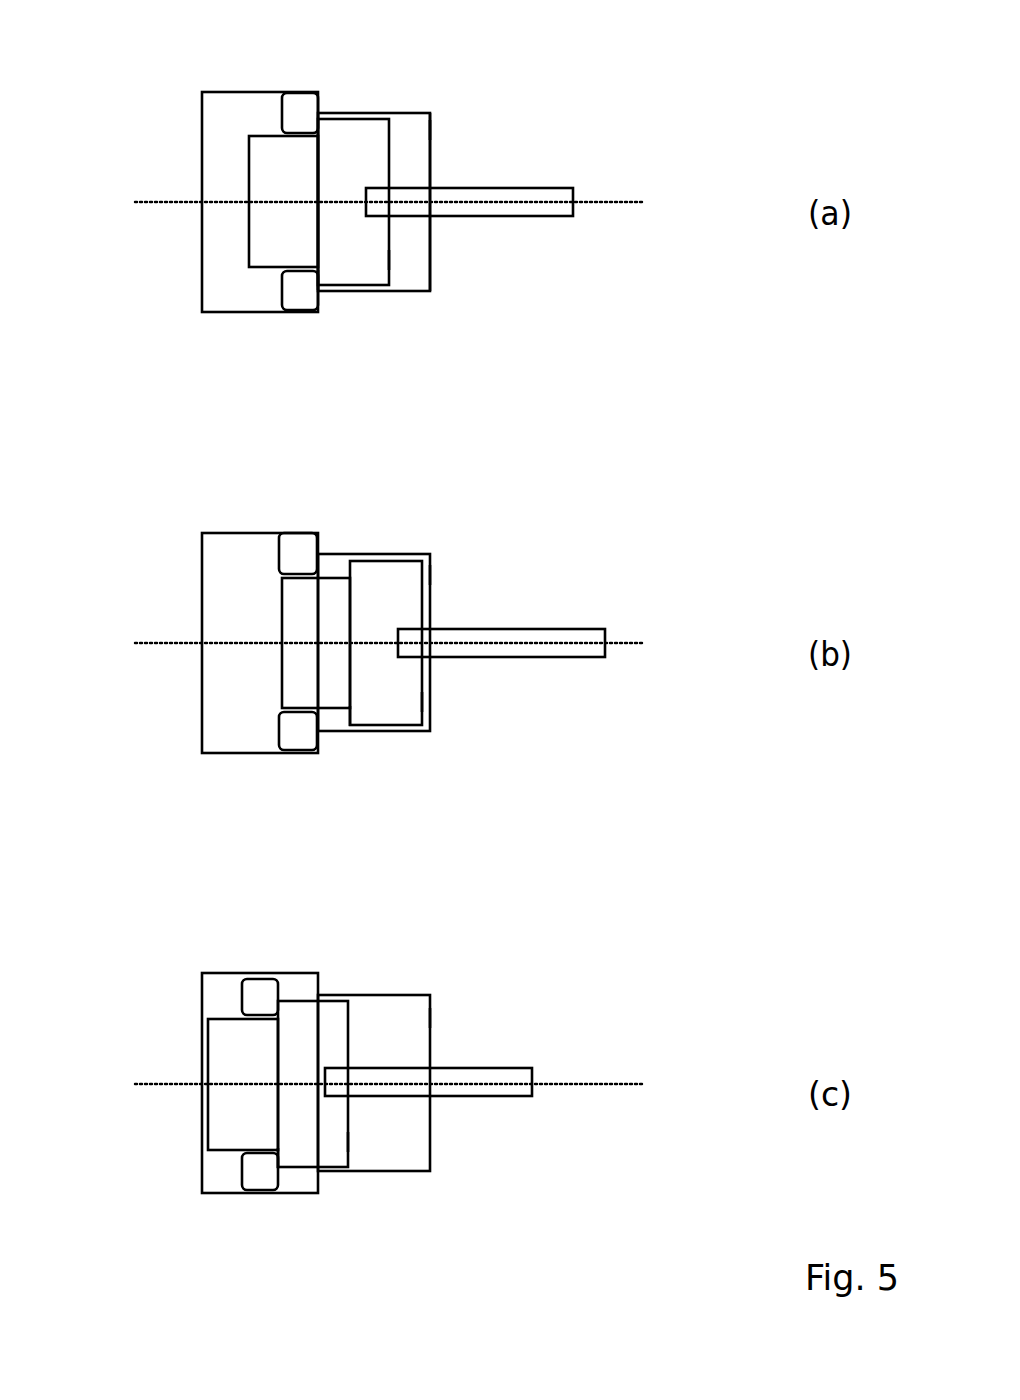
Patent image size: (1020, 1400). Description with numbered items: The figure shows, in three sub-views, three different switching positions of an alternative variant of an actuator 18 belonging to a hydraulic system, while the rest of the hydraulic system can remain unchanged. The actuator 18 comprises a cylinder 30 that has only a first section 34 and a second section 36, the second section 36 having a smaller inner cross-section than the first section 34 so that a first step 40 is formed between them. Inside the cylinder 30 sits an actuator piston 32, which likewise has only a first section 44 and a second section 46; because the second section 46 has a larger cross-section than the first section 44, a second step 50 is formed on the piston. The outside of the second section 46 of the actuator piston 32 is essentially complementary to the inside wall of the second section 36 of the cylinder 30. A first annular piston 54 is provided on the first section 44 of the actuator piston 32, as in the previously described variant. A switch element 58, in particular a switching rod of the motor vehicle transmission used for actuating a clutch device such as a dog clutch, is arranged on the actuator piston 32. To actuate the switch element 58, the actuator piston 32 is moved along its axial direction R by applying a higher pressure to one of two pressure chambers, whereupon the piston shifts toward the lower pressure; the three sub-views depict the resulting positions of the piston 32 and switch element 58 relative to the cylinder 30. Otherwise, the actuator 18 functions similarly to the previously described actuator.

The actuator 18 is at (150, 90).
The first section of the cylinder 34 is at (212, 90).
The first annular piston 54 is at (302, 118).
The first step 40 is at (323, 102).
The actuator piston 32 is at (368, 152).
The second section of the cylinder 36 is at (424, 111).
The cylinder 30 is at (430, 131).
The switch element 58 is at (528, 195).
The axial direction R is at (598, 200).
The first section of the actuator piston 44 is at (267, 238).
The second step 50 is at (322, 277).
The second section of the actuator piston 46 is at (365, 259).